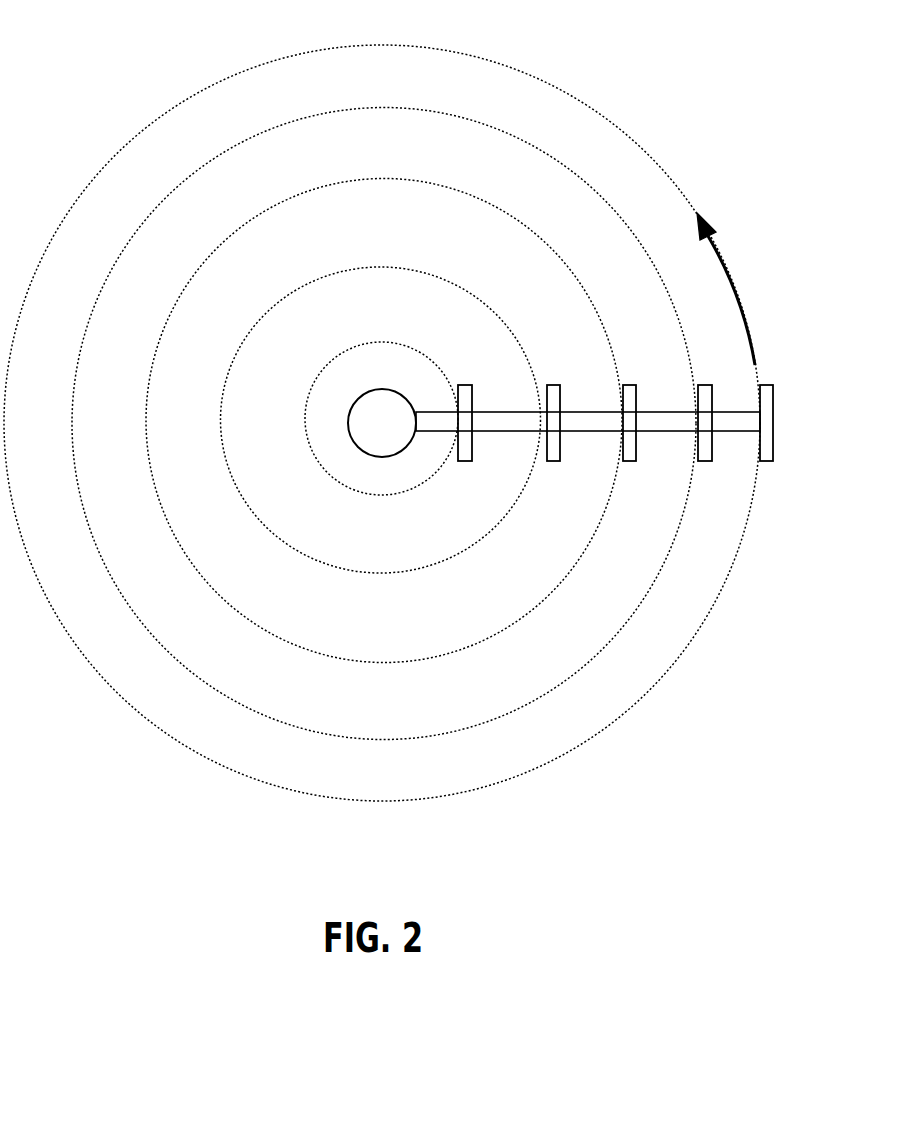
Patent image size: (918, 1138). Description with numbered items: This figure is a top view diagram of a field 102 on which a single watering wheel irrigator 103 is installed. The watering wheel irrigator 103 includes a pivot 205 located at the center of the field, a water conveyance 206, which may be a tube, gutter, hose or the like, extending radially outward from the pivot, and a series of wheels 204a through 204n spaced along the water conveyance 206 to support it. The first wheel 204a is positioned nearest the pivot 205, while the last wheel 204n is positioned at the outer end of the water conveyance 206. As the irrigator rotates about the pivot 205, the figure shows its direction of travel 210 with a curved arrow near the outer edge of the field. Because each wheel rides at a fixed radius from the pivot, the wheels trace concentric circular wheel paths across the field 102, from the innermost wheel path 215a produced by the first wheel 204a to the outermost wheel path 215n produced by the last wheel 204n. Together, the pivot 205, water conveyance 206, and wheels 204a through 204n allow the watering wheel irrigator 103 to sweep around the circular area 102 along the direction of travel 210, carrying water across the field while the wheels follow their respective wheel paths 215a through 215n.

The field 102 is at (87, 42).
The wheel path 215n is at (615, 122).
The wheel path 215a is at (350, 350).
The direction of travel 210 is at (728, 262).
The pivot 205 is at (382, 423).
The watering wheel irrigator 103 is at (588, 415).
The wheel 204a is at (462, 385).
The water conveyance 206 is at (660, 433).
The wheel 204n is at (773, 392).